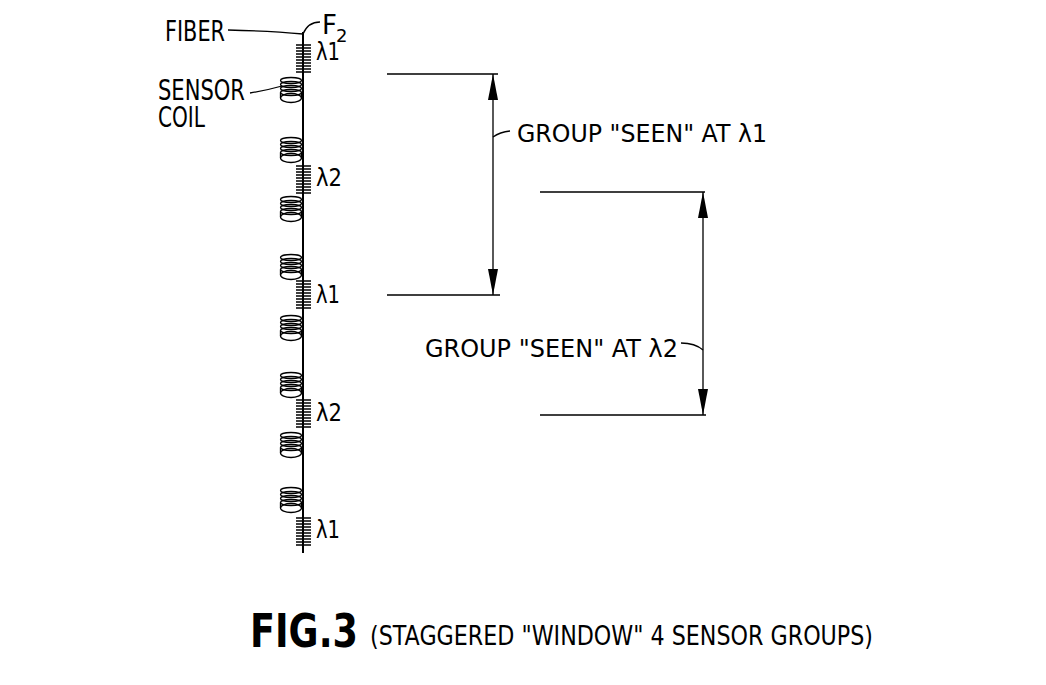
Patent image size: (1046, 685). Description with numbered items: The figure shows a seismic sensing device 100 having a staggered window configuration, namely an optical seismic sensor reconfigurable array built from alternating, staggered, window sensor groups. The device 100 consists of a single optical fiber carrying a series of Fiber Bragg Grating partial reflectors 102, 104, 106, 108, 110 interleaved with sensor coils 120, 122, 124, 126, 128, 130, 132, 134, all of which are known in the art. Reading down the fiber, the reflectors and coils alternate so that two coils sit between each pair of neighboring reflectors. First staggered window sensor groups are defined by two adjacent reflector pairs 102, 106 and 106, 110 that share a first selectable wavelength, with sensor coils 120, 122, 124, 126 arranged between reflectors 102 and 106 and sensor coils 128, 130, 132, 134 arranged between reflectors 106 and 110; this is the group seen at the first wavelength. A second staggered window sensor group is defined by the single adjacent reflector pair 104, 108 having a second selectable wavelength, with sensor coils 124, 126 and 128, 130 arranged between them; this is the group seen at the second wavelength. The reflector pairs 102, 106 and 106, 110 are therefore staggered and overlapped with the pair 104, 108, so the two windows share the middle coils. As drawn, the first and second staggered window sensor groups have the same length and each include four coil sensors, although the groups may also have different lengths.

The seismic sensing device 100 is at (120, 128).
The Fiber Bragg Grating partial reflector 102 is at (297, 52).
The Fiber Bragg Grating partial reflector 104 is at (297, 178).
The Fiber Bragg Grating partial reflector 106 is at (297, 295).
The Fiber Bragg Grating partial reflector 108 is at (297, 413).
The Fiber Bragg Grating partial reflector 110 is at (297, 530).
The sensor coil 120 is at (305, 86).
The sensor coil 122 is at (305, 145).
The sensor coil 124 is at (305, 206).
The sensor coil 126 is at (305, 263).
The sensor coil 128 is at (305, 324).
The sensor coil 130 is at (305, 381).
The sensor coil 132 is at (305, 442).
The sensor coil 134 is at (305, 496).